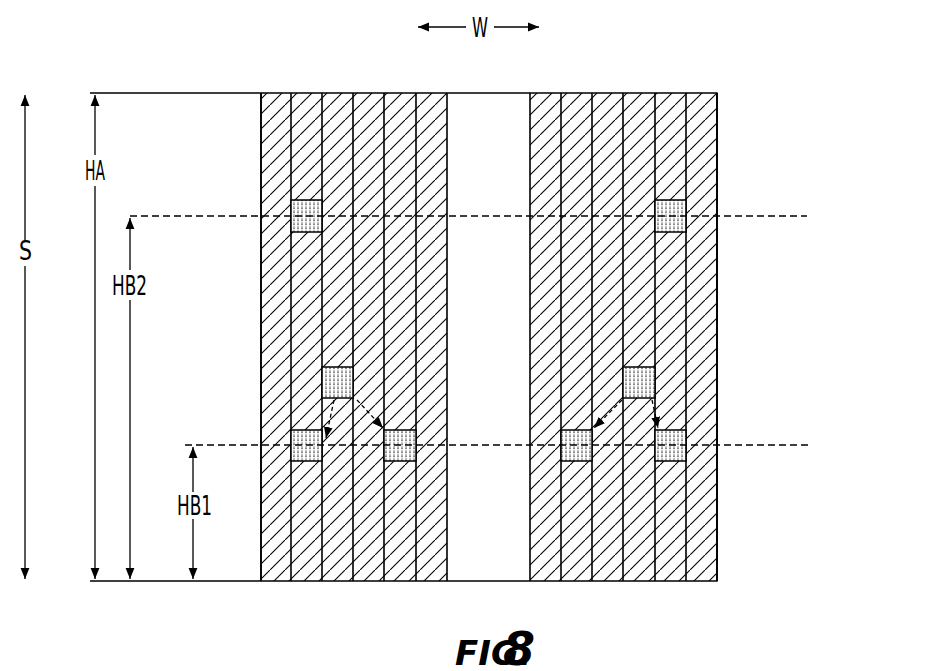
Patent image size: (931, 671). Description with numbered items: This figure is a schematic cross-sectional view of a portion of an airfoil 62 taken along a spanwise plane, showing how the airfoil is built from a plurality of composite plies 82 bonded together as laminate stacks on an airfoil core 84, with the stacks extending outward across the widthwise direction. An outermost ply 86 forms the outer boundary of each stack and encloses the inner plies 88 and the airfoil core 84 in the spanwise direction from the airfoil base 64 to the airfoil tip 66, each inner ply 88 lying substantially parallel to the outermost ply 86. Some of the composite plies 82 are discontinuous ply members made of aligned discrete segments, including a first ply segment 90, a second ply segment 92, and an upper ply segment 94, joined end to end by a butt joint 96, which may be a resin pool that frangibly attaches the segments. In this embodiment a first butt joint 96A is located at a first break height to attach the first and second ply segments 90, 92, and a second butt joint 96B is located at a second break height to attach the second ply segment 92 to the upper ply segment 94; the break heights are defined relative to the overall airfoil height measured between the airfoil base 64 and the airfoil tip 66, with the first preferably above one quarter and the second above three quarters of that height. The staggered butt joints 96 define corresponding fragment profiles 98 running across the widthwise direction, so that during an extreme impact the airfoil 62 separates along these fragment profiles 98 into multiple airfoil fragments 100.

The airfoil 62 is at (848, 96).
The airfoil base 64 is at (255, 593).
The airfoil tip 66 is at (259, 74).
The composite plies 82 is at (670, 583).
The airfoil core 84 is at (498, 347).
The outermost ply 86 is at (261, 285).
The inner plies 88 is at (447, 90).
The first ply segment 90 is at (305, 543).
The second ply segment 92 is at (298, 371).
The upper region 94 is at (303, 176).
The butt joint 96 is at (570, 437).
The first butt joint 96A is at (291, 432).
The second butt joint 96B is at (300, 215).
The fragment profile 98 is at (765, 212).
The airfoil fragments 100 is at (720, 147).